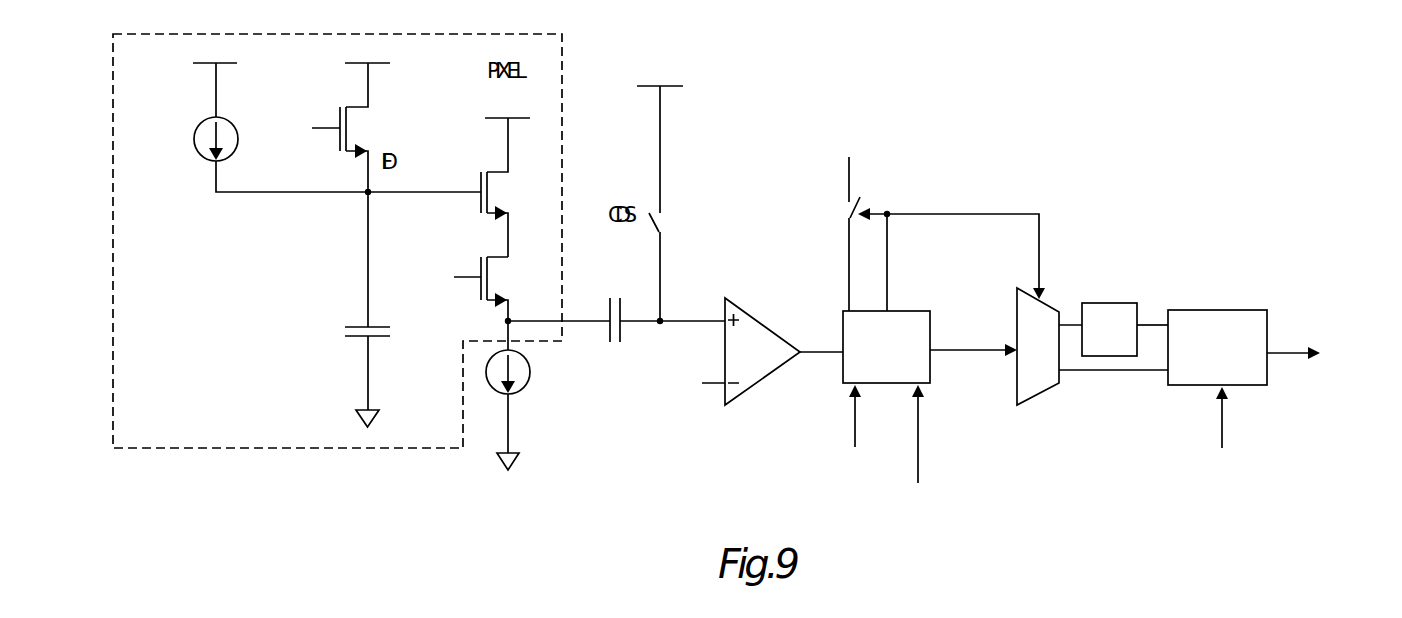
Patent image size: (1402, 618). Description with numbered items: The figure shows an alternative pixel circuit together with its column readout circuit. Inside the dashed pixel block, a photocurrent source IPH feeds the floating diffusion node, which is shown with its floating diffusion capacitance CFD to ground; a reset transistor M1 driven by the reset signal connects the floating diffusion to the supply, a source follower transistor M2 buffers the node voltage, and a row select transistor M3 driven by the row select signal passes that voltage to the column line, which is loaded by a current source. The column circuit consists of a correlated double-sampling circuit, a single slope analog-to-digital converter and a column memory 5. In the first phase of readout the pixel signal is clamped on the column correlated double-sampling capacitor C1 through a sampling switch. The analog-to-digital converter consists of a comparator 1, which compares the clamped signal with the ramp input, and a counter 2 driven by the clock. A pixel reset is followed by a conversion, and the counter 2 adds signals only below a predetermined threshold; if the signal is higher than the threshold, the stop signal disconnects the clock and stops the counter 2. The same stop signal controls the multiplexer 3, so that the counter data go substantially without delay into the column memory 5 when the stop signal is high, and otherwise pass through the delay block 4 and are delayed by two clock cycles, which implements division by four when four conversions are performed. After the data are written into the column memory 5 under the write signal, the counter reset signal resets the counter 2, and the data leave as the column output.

The comparator 1 is at (750, 351).
The counter 2 is at (941, 324).
The MUX 3 is at (1092, 346).
The delay 4 is at (1125, 329).
The column memory 5 is at (1275, 400).
The reset transistor M1 is at (331, 127).
The source follower transistor M2 is at (498, 187).
The row select transistor M3 is at (485, 289).
The column CDS capacitor C1 is at (616, 306).
The floating diffusion capacitor CFD is at (347, 309).
The photocurrent source IPH is at (265, 127).